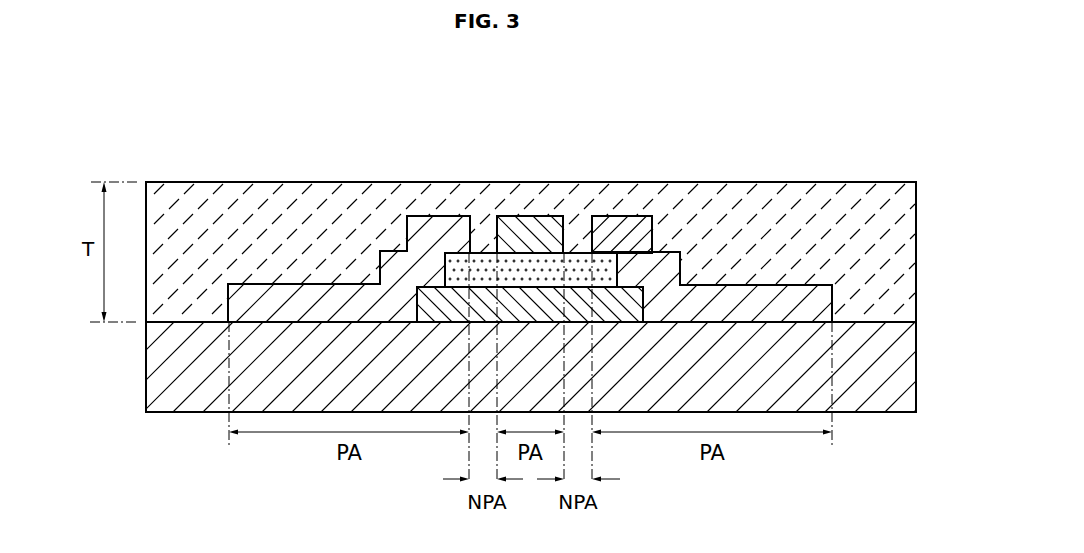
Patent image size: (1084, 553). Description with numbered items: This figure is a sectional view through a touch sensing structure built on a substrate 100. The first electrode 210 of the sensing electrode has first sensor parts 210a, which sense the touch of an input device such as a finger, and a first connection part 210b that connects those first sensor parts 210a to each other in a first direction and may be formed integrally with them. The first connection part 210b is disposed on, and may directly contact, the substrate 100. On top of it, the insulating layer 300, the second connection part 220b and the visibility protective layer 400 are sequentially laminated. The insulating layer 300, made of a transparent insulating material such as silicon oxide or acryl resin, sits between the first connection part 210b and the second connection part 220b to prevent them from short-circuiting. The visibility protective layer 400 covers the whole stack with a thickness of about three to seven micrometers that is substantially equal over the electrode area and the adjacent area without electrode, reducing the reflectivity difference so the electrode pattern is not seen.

The substrate 100 is at (146, 362).
The first electrode 210 is at (516, 207).
The first sensor parts 210a is at (732, 285).
The first connection part 210b is at (623, 287).
The second connection part 220b is at (528, 218).
The insulating layer 300 is at (453, 253).
The visibility protective layer 400 is at (290, 184).